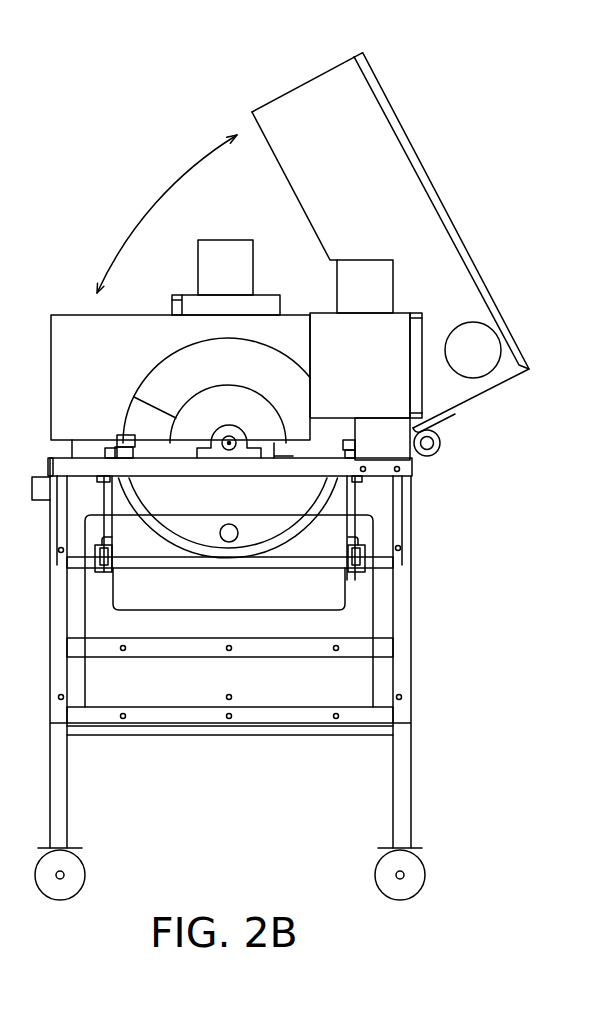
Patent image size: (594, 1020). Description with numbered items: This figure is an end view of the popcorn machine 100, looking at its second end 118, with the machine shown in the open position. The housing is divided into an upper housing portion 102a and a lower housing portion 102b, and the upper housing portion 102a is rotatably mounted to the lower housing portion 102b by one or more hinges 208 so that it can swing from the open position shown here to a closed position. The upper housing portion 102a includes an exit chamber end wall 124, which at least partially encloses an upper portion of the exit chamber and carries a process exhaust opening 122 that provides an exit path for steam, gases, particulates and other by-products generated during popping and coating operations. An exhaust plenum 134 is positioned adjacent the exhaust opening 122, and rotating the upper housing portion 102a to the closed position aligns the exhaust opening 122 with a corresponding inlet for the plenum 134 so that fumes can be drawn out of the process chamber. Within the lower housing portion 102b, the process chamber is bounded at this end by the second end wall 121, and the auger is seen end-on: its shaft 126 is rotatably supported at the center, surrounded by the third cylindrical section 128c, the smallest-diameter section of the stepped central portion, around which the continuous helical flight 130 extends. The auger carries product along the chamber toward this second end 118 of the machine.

The popcorn machine 100 is at (100, 112).
The upper housing portion 102a is at (297, 87).
The lower housing portion 102b is at (412, 528).
The second end 118 is at (358, 627).
The second end wall 121 is at (82, 448).
The process exhaust opening 122 is at (487, 333).
The exit chamber end wall 124 is at (415, 198).
The auger shaft 126 is at (229, 453).
The third cylindrical section 128c is at (212, 385).
The flight 130 is at (158, 382).
The exhaust plenum 134 is at (310, 332).
The hinge 208 is at (443, 444).